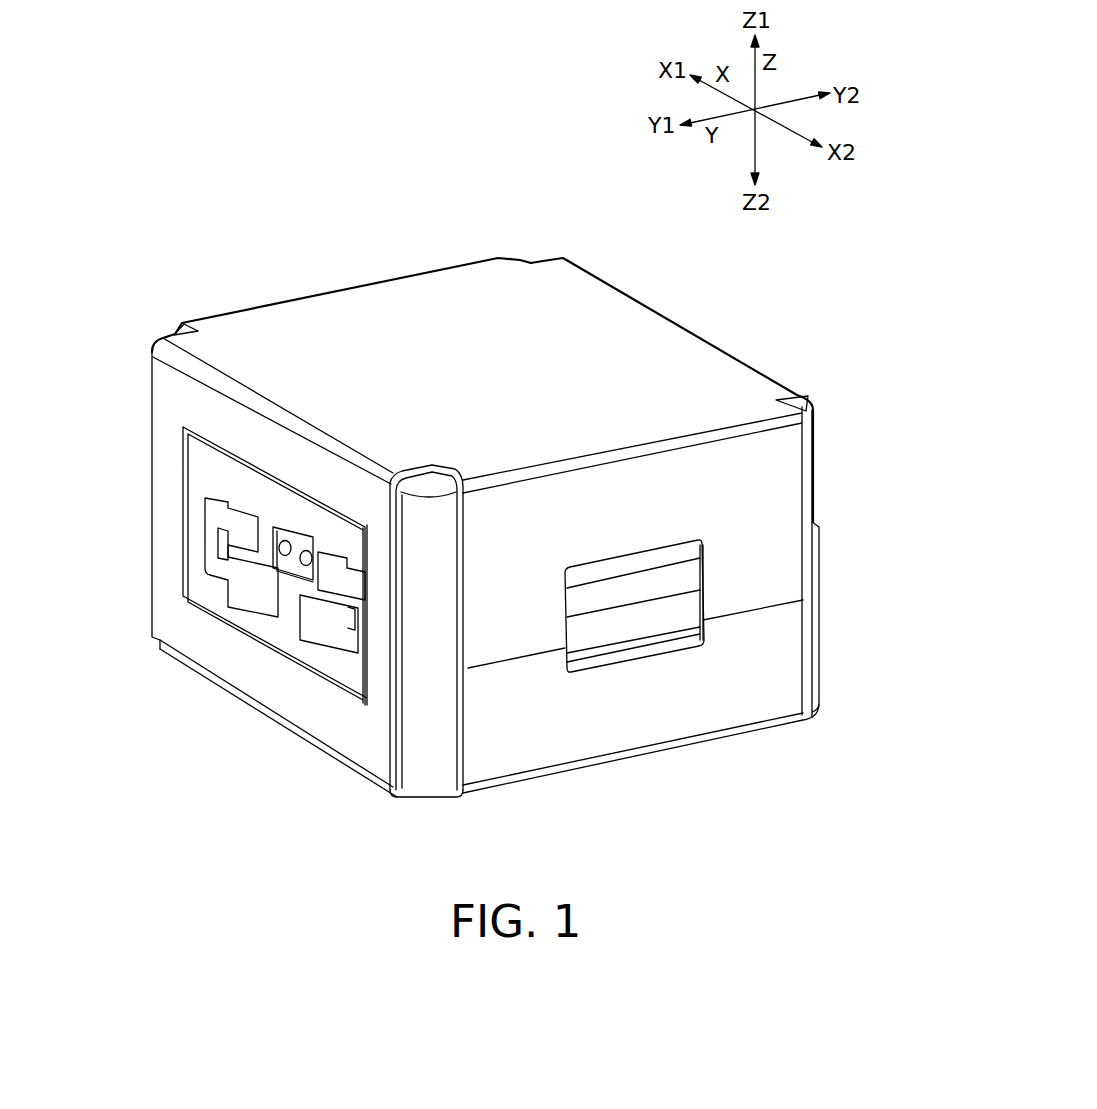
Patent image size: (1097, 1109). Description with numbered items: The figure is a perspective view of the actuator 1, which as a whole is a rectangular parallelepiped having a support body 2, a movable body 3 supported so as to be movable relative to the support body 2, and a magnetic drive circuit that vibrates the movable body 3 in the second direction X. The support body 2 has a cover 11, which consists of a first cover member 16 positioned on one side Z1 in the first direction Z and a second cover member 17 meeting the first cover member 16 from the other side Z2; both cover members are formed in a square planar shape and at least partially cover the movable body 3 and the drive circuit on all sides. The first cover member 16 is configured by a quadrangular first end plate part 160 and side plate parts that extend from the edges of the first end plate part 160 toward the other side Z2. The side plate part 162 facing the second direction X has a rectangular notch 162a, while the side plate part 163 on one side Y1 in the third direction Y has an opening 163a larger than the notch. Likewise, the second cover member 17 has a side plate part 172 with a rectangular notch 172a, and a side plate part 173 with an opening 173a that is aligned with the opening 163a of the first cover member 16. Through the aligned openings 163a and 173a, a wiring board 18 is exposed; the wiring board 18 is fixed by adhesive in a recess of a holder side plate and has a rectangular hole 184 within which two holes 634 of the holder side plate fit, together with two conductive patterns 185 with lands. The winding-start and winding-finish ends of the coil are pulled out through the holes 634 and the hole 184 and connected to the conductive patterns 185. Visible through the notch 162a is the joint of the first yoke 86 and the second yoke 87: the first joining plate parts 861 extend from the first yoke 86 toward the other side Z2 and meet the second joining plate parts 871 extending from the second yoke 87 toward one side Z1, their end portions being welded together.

The actuator 1 is at (182, 192).
The support body 2 is at (500, 248).
The movable body 3 is at (659, 631).
The cover 11 is at (943, 357).
The first cover member 16 is at (750, 388).
The second cover member 17 is at (800, 651).
The wiring board 18 is at (272, 632).
The first end plate part 160 is at (446, 287).
The side plate part 162 is at (772, 470).
The notch 162a is at (707, 568).
The side plate part 163 is at (157, 397).
The opening 163a is at (183, 445).
The side plate part 172 is at (790, 679).
The notch 172a is at (695, 648).
The side plate part 173 is at (340, 760).
The opening 173a is at (186, 473).
The rectangular hole 184 is at (278, 530).
The conductive patterns 185 is at (227, 580).
The holes 634 is at (306, 557).
The first yoke 86 is at (627, 567).
The first joining plate parts 861 is at (633, 587).
The second yoke 87 is at (605, 632).
The second joining plate parts 871 is at (633, 644).